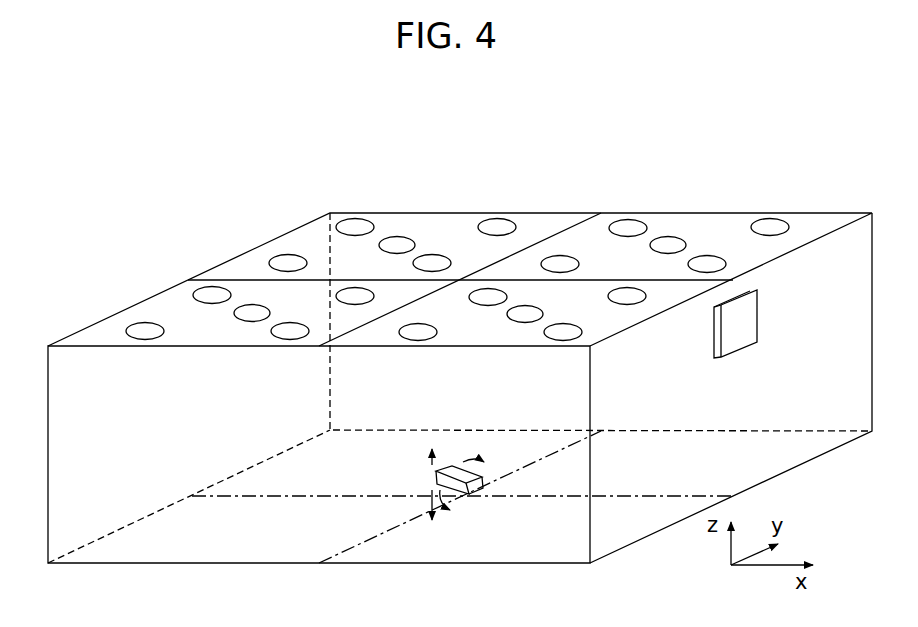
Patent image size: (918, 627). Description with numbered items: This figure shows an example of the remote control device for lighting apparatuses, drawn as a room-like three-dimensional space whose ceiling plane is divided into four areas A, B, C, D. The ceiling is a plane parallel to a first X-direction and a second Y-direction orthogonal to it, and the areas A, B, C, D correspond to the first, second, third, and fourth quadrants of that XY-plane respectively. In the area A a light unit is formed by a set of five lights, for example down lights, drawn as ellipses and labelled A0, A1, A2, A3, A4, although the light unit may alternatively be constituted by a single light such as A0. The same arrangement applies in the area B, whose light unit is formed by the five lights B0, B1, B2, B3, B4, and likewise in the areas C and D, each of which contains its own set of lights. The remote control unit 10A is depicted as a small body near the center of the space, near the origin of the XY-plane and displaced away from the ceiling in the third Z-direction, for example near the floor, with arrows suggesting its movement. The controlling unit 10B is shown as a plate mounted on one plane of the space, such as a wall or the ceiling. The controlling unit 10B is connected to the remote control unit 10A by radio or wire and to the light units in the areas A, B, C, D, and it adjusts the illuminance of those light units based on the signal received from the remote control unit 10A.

The area A is at (665, 224).
The area B is at (392, 224).
The area C is at (250, 316).
The area D is at (522, 316).
The light A0 is at (668, 245).
The light A1 is at (707, 264).
The light A2 is at (770, 227).
The light A3 is at (628, 228).
The light A4 is at (558, 263).
The light B0 is at (397, 245).
The light B1 is at (432, 263).
The light B2 is at (497, 227).
The light B3 is at (353, 226).
The light B4 is at (285, 262).
The remote control unit 10A is at (477, 487).
The controlling unit 10B is at (737, 332).